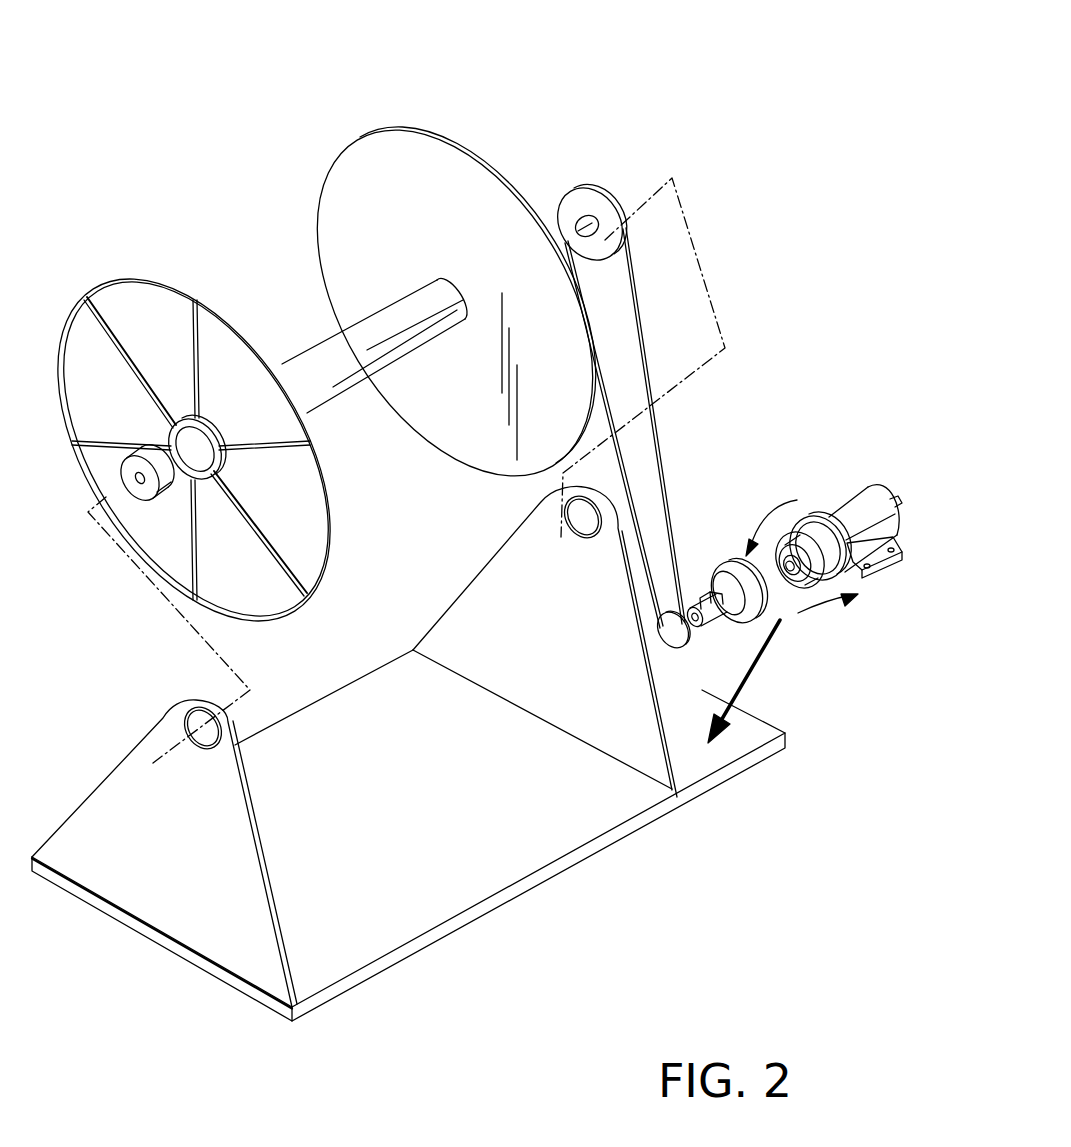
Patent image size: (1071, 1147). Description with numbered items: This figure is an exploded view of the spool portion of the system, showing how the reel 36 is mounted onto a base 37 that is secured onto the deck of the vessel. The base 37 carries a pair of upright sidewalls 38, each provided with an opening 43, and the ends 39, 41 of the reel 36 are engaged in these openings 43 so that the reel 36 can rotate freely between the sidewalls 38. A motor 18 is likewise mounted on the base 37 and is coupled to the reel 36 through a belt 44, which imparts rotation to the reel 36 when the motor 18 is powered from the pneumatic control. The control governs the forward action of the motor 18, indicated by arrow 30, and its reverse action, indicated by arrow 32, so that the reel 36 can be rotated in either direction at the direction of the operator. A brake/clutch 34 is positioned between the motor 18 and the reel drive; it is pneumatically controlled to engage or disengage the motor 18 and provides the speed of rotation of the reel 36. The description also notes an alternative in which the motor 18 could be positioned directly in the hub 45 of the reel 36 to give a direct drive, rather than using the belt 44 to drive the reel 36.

The motor 18 is at (865, 513).
The arrow indicating forward action 30 is at (776, 500).
The arrow indicating reverse action 32 is at (826, 614).
The brake/clutch 34 is at (711, 568).
The reel 36 is at (433, 205).
The base 37 is at (545, 837).
The upright sidewalls 38 is at (550, 633).
The end of the reel 39 is at (140, 478).
The end of the reel 41 is at (557, 248).
The openings 43 is at (570, 522).
The belt 44 is at (647, 357).
The hub 45 is at (297, 377).